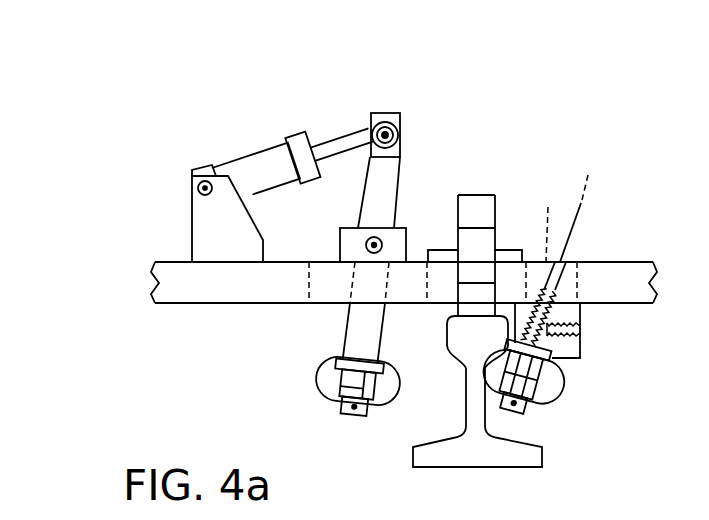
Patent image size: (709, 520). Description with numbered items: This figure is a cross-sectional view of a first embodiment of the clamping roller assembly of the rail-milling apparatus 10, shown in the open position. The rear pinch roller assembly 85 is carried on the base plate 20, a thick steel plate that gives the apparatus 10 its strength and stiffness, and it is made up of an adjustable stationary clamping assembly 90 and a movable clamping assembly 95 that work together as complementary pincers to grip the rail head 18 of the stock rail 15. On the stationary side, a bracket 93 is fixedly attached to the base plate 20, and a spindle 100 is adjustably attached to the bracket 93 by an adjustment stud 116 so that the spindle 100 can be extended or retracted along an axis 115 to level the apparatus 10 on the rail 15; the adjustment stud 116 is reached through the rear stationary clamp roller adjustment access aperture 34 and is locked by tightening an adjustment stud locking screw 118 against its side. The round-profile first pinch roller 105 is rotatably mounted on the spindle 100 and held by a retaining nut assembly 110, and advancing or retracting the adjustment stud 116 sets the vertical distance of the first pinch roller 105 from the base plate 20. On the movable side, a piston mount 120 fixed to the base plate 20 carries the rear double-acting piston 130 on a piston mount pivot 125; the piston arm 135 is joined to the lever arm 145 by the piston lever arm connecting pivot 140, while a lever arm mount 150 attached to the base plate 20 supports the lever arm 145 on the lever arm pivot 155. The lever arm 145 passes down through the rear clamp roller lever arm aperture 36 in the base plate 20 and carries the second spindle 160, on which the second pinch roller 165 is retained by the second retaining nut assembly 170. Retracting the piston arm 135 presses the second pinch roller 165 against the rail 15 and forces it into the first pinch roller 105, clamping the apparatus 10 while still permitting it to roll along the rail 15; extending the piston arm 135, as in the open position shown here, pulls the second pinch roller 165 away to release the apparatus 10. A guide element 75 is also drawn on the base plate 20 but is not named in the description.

The apparatus 10 is at (181, 124).
The stock rail 15 is at (413, 458).
The rail head 18 is at (447, 333).
The base plate 20 is at (630, 262).
The rear stationary clamp roller adjustment access aperture 34 is at (529, 227).
The rear clamp roller lever arm aperture 36 is at (311, 306).
The guide post 75 is at (480, 195).
The rear pinch roller assembly 85 is at (577, 273).
The adjustable stationary clamping assembly 90 is at (576, 399).
The bracket 93 is at (582, 357).
The movable clamping assembly 95 is at (358, 218).
The spindle 100 is at (557, 390).
The first pinch roller 105 is at (566, 382).
The retaining nut assembly 110 is at (530, 408).
The axis 115 is at (582, 202).
The adjustment stud 116 is at (575, 262).
The adjustment stud locking screw 118 is at (580, 327).
The piston mount 120 is at (192, 240).
The piston mount pivot 125 is at (198, 188).
The rear double-acting piston 130 is at (248, 156).
The piston arm 135 is at (350, 129).
The piston lever arm connecting pivot 140 is at (402, 119).
The lever arm 145 is at (399, 170).
The lever arm mount 150 is at (340, 240).
The lever arm pivot 155 is at (380, 242).
The second spindle 160 is at (345, 383).
The second pinch roller 165 is at (315, 379).
The second retaining nut assembly 170 is at (340, 416).